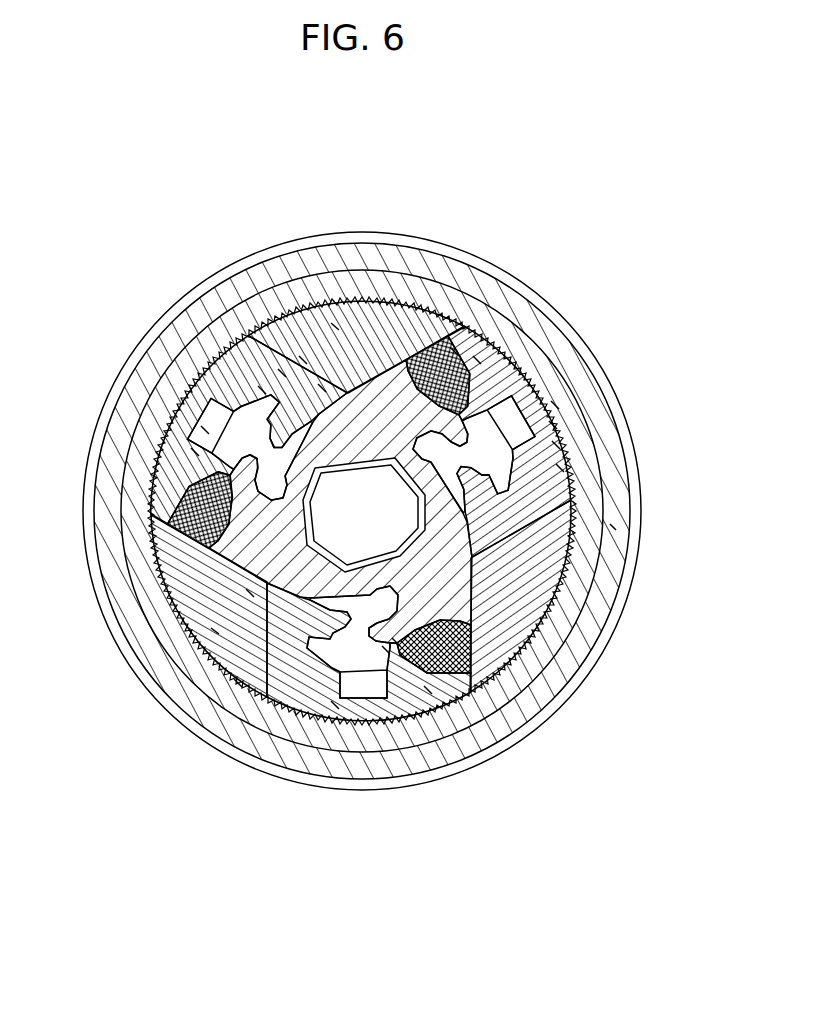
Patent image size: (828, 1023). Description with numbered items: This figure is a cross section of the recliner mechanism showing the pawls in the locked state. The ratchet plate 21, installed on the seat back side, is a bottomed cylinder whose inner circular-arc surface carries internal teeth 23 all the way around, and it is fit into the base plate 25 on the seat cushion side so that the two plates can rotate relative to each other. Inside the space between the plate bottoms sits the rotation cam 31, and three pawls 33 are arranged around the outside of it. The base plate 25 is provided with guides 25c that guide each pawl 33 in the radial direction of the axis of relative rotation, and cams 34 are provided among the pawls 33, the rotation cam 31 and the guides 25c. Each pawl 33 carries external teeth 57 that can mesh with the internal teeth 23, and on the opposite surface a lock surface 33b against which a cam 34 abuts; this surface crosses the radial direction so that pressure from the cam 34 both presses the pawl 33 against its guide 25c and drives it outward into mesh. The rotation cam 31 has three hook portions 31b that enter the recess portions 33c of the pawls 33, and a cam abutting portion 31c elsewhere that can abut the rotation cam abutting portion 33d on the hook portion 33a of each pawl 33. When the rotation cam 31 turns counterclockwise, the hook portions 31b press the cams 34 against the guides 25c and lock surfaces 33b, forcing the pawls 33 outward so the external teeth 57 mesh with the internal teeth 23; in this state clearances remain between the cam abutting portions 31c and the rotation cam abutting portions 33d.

The ratchet plate 21 is at (540, 662).
The internal teeth 23 is at (598, 483).
The base plate 25 is at (610, 568).
The guide 25c is at (333, 325).
The rotation cam 31 is at (275, 540).
The hook portion 31b is at (205, 430).
The cam abutting portion 31c is at (322, 388).
The pawl 33 is at (238, 402).
The hook portion 33a is at (282, 373).
The lock surface 33b is at (195, 452).
The recess portion 33c is at (262, 390).
The rotation cam abutting portion 33d is at (303, 360).
The cam 34 is at (190, 485).
The external teeth 57 is at (224, 412).